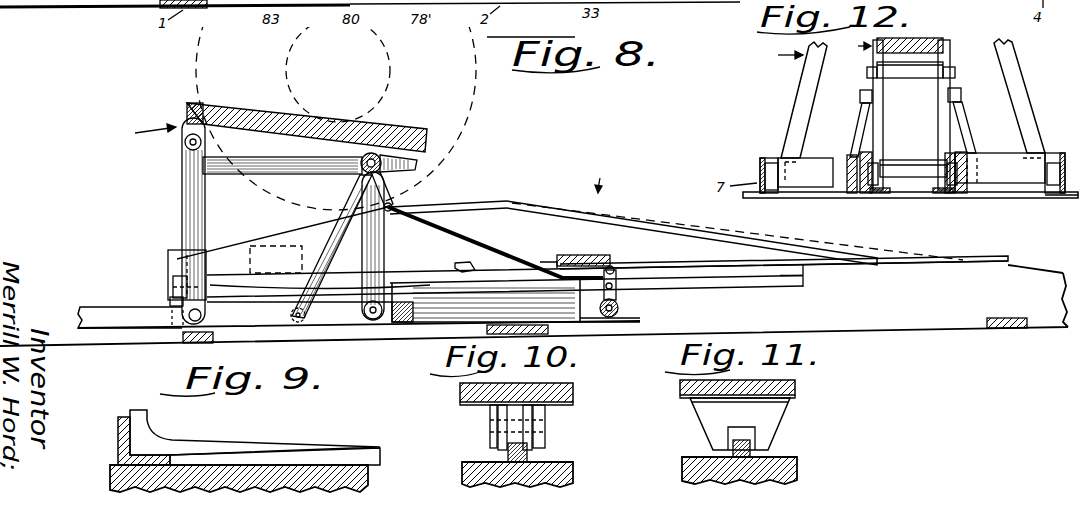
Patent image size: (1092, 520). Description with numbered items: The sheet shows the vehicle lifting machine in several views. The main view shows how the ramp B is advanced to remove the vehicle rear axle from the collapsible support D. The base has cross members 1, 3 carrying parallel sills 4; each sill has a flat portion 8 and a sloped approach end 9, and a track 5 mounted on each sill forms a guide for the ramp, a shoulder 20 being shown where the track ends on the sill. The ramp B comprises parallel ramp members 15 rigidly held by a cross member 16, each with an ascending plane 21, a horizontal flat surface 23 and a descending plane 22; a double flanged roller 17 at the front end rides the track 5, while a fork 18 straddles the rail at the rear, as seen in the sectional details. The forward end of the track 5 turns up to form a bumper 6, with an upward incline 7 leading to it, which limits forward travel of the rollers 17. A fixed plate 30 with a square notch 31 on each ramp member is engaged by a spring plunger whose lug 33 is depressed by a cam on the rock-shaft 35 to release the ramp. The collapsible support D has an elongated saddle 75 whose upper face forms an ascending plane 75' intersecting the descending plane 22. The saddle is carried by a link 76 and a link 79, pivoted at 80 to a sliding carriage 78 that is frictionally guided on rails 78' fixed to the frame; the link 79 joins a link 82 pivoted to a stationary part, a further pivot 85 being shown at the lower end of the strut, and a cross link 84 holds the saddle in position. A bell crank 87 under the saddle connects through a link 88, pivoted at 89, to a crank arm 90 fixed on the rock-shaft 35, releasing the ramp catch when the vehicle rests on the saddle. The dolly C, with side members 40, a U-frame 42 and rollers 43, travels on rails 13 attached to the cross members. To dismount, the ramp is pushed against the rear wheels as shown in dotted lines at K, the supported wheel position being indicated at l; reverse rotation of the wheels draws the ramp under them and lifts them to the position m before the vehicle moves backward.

In FIG. 8, the cross member 1 is at (182, 343).
In FIG. 12, the cross member 1 is at (840, 198).
In FIG. 8, the cross member 3 is at (1000, 318).
In FIG. 8, the sill 4 is at (957, 322).
In FIG. 9, the sill 4 is at (110, 478).
In FIG. 10, the sill 4 is at (462, 477).
In FIG. 11, the sill 4 is at (682, 473).
In FIG. 8, the track 5 is at (750, 285).
In FIG. 9, the track 5 is at (358, 450).
In FIG. 10, the track 5 is at (505, 456).
In FIG. 11, the track 5 is at (732, 448).
In FIG. 8, the bumper 6 is at (172, 283).
In FIG. 9, the bumper 6 is at (128, 415).
In FIG. 9, the upward incline 7 is at (228, 442).
In FIG. 8, the flat portion 8 is at (975, 258).
In FIG. 8, the sloped approach end 9 is at (1027, 266).
In FIG. 12, the rail 13 is at (1054, 198).
In FIG. 8, the ramp member 15 is at (537, 217).
In FIG. 10, the ramp member 15 is at (460, 392).
In FIG. 11, the ramp member 15 is at (680, 389).
In FIG. 8, the cross member 16 is at (590, 255).
In FIG. 10, the double flanged roller 17 is at (490, 421).
In FIG. 11, the fork 18 is at (708, 417).
In FIG. 8, the shoulder 20 is at (808, 276).
In FIG. 8, the ascending plane 21 is at (642, 226).
In FIG. 8, the descending plane 22 is at (170, 250).
In FIG. 8, the horizontal flat surface 23 is at (483, 205).
In FIG. 8, the fixed plate 30 is at (545, 262).
In FIG. 8, the square notch 31 is at (458, 263).
In FIG. 8, the lug 33 is at (593, 330).
In FIG. 8, the rock-shaft 35 is at (618, 308).
In FIG. 12, the side member 40 is at (800, 86).
In FIG. 12, the U-frame 42 is at (810, 162).
In FIG. 12, the roller 43 is at (760, 175).
In FIG. 8, the saddle 75 is at (165, 108).
In FIG. 12, the saddle 75 is at (910, 32).
In FIG. 8, the ascending plane 75' is at (307, 118).
In FIG. 8, the link 76 is at (182, 208).
In FIG. 12, the link 76 is at (884, 121).
In FIG. 8, the sliding carriage 78 is at (130, 306).
In FIG. 12, the sliding carriage 78 is at (912, 158).
In FIG. 8, the rail 78' is at (516, 289).
In FIG. 12, the rail 78' is at (911, 204).
In FIG. 8, the link 79 is at (380, 263).
In FIG. 8, the pivot 80 is at (373, 319).
In FIG. 8, the link 82 is at (316, 258).
In FIG. 12, the link 82 is at (860, 122).
In FIG. 8, the cross link 84 is at (250, 158).
In FIG. 12, the cross link 84 is at (862, 92).
In FIG. 8, the pivot 85 is at (290, 315).
In FIG. 8, the bell crank 87 is at (396, 153).
In FIG. 8, the link 88 is at (478, 247).
In FIG. 8, the pivot 89 is at (614, 263).
In FIG. 8, the crank arm 90 is at (616, 284).
In FIG. 8, the ramp B is at (595, 173).
In FIG. 12, the dolly C is at (781, 57).
In FIG. 8, the collapsible support D is at (142, 135).
In FIG. 12, the collapsible support D is at (854, 45).
In FIG. 8, the ramp pushed position K is at (290, 240).
In FIG. 8, the supported position of rear wheels l is at (476, 141).
In FIG. 8, the raised position of rear wheels m is at (190, 66).